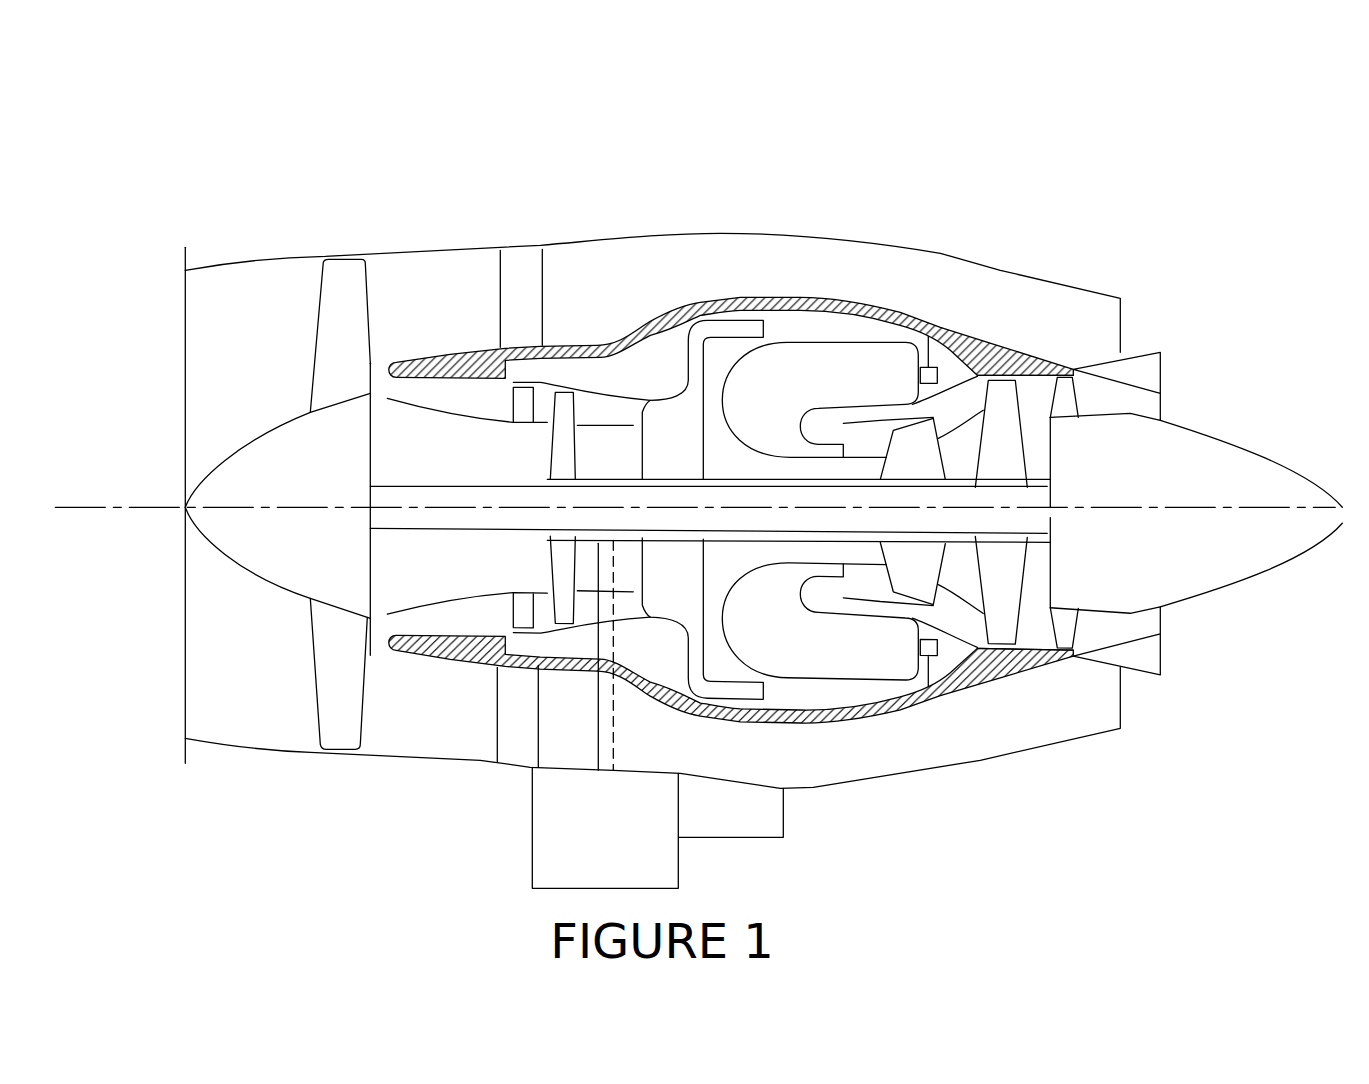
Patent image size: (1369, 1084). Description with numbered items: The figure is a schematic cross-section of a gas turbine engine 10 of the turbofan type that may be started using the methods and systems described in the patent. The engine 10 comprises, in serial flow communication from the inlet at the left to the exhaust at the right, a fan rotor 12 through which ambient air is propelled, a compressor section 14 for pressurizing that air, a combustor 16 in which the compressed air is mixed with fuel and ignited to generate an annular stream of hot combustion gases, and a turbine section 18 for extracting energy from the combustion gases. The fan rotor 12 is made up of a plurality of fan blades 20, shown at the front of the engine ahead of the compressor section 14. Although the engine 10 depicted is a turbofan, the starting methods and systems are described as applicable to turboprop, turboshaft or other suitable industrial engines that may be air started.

The gas turbine engine 10 is at (987, 177).
The fan rotor 12 is at (326, 343).
The compressor section 14 is at (598, 403).
The combustor 16 is at (823, 363).
The turbine section 18 is at (958, 580).
The fan blades 20 is at (333, 665).